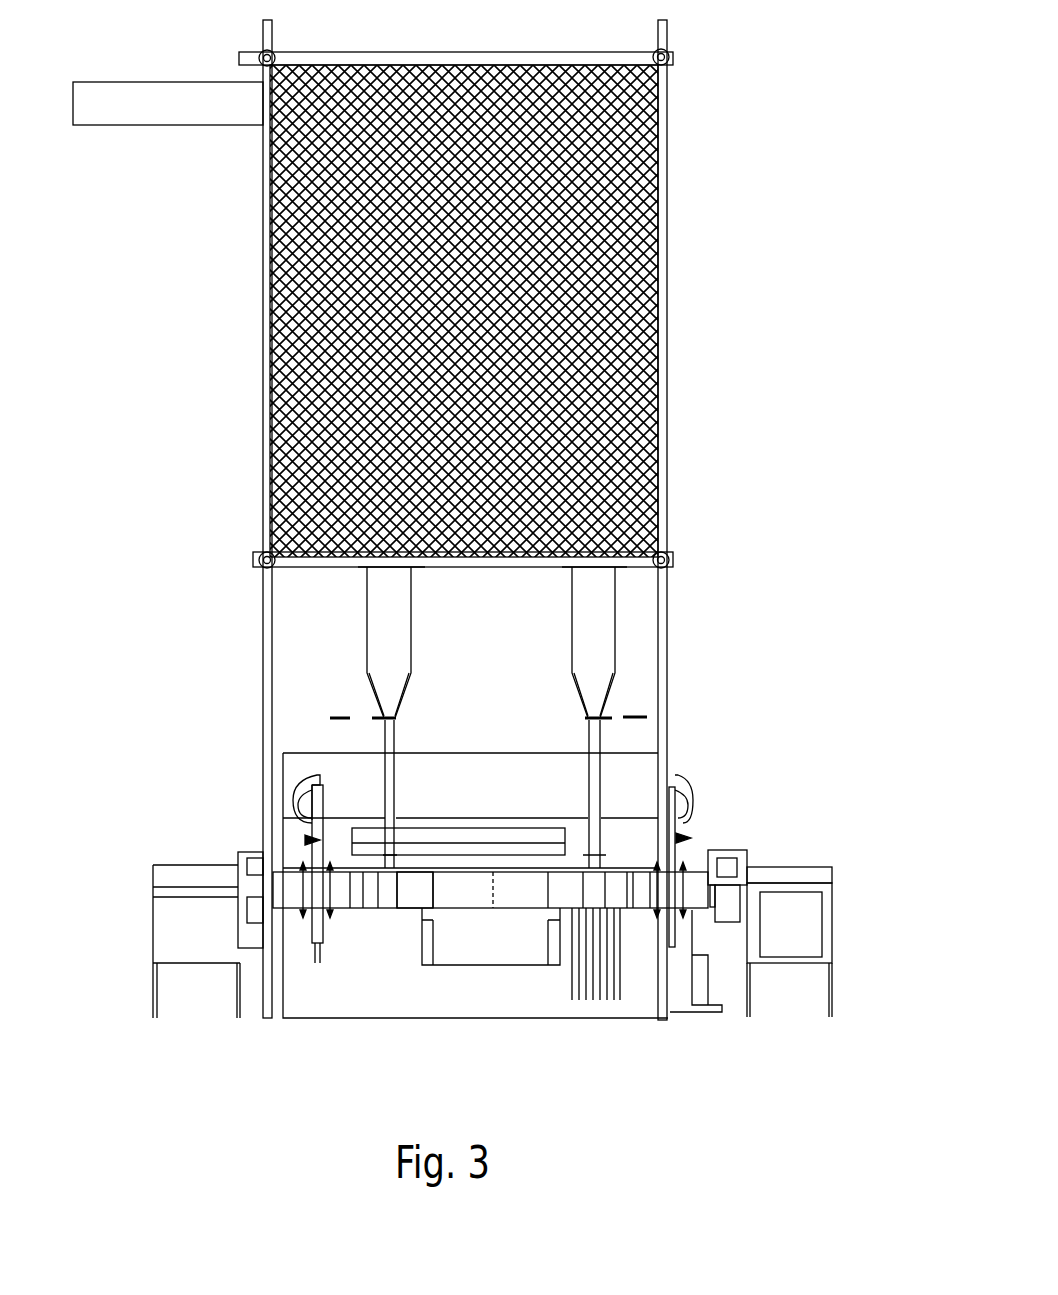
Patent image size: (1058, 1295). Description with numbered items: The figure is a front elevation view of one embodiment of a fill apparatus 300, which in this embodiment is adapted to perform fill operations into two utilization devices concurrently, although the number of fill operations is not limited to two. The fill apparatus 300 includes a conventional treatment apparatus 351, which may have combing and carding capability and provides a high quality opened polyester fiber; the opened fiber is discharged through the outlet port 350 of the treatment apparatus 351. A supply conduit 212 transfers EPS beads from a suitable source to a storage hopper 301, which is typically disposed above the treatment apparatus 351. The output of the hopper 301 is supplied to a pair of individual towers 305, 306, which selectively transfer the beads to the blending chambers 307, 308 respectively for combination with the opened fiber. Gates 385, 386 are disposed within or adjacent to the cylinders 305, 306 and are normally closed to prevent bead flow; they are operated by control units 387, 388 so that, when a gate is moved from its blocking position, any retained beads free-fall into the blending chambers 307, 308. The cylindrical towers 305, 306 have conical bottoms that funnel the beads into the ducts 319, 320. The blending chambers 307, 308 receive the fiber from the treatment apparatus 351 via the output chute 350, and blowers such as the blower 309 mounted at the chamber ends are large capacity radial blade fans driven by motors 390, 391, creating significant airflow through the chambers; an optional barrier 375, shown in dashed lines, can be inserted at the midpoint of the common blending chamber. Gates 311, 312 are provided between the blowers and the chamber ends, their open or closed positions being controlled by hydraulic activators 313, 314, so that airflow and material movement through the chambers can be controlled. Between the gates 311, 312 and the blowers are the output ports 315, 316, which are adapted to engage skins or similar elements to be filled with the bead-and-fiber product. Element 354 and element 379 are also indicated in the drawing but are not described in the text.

The supply conduit 212 is at (97, 82).
The fill apparatus 300 is at (811, 283).
The storage hopper 301 is at (656, 247).
The tower 305 is at (378, 599).
The tower 306 is at (610, 632).
The blending chamber 307 is at (250, 915).
The blending chamber 308 is at (535, 940).
The blower 309 is at (725, 918).
The gate 311 is at (313, 858).
The gate 312 is at (673, 857).
The hydraulic activator 313 is at (315, 805).
The hydraulic activator 314 is at (680, 790).
The output port 315 is at (250, 866).
The output port 316 is at (737, 867).
The duct 319 is at (393, 742).
The duct 320 is at (593, 772).
The outlet port 350 is at (540, 950).
The treatment apparatus 351 is at (335, 998).
The segment 354 is at (410, 900).
The barrier 375 is at (492, 895).
The cone 379 is at (392, 683).
The gate 385 is at (395, 723).
The gate 386 is at (588, 715).
The control unit 387 is at (322, 718).
The control unit 388 is at (640, 715).
The motor 390 is at (163, 935).
The motor 391 is at (820, 940).